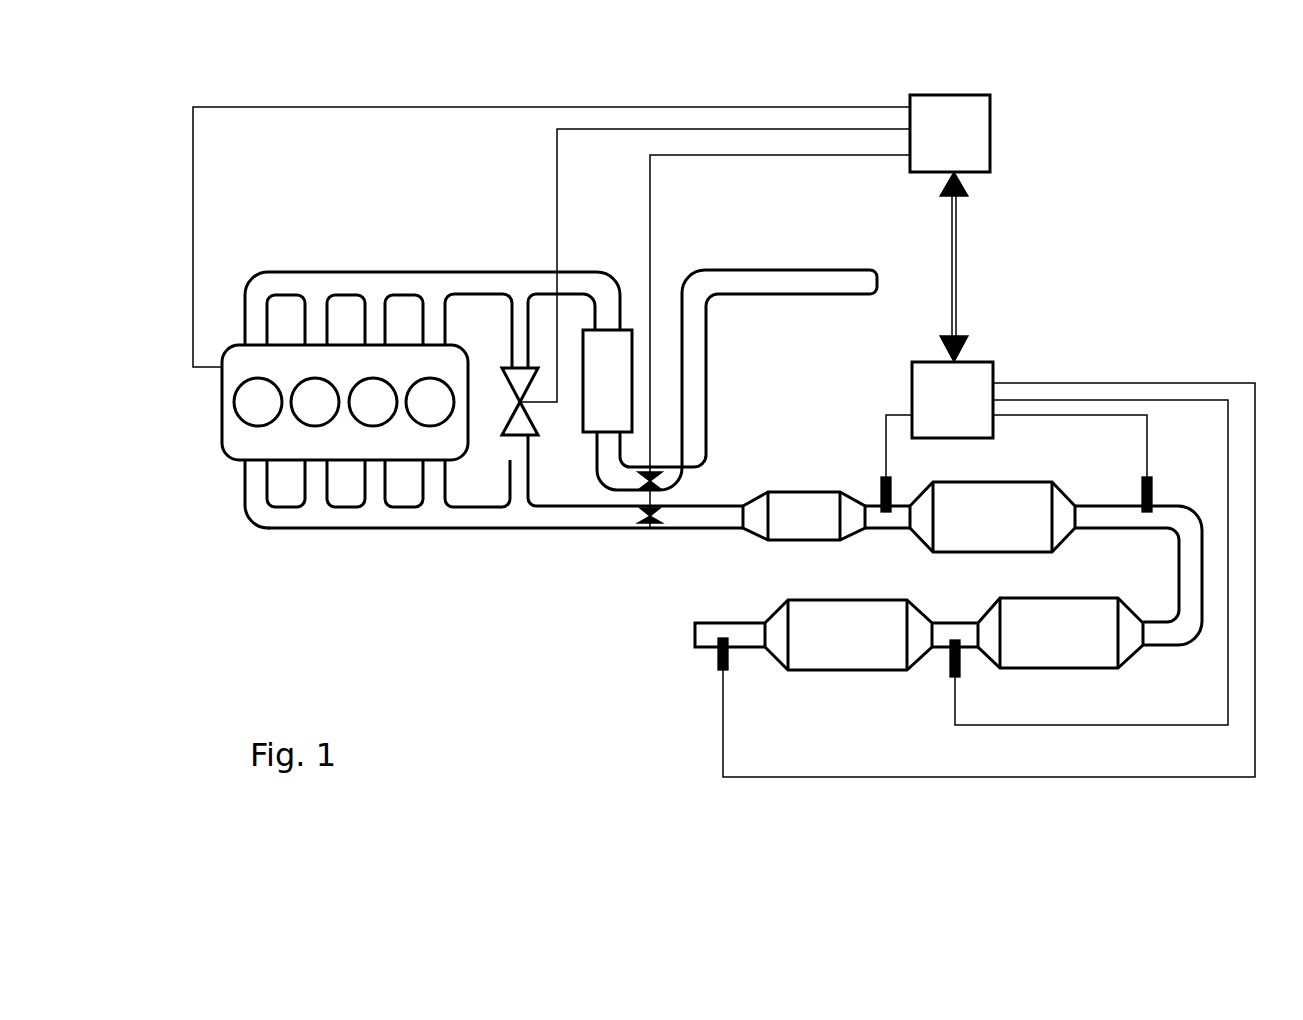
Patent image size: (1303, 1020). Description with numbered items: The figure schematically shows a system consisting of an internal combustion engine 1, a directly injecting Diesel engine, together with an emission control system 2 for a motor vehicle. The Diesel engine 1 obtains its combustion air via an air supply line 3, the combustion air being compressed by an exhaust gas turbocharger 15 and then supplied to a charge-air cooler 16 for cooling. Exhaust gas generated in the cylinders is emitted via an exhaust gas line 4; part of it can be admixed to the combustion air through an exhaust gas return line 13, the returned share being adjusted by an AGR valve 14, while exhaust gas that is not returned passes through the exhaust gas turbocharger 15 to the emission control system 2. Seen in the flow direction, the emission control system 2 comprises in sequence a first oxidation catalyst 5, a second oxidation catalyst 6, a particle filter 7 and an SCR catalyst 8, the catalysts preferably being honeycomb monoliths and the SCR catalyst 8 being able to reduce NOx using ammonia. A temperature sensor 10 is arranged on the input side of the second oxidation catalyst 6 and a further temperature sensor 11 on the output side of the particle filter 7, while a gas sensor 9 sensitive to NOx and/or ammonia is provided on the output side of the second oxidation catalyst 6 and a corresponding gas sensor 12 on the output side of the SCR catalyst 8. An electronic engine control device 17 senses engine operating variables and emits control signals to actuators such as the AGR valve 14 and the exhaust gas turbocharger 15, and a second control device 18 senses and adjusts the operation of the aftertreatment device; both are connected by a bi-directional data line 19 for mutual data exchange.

The internal combustion engine 1 is at (222, 402).
The emission control system 2 is at (632, 674).
The air supply line 3 is at (695, 320).
The exhaust gas line 4 is at (573, 520).
The first oxidation catalyst 5 is at (804, 516).
The second oxidation catalyst 6 is at (992, 517).
The particle filter 7 is at (1060, 633).
The SCR catalyst 8 is at (848, 635).
The gas sensor 9 is at (1142, 480).
The temperature sensor 10 is at (880, 483).
The temperature sensor 11 is at (948, 655).
The gas sensor 12 is at (718, 652).
The exhaust gas return line 13 is at (518, 457).
The AGR valve 14 is at (463, 452).
The exhaust gas turbocharger 15 is at (652, 530).
The charge-air cooler 16 is at (616, 410).
The engine control device 17 is at (591, 311).
The second control device 18 is at (952, 400).
The bi-directional data line 19 is at (952, 235).